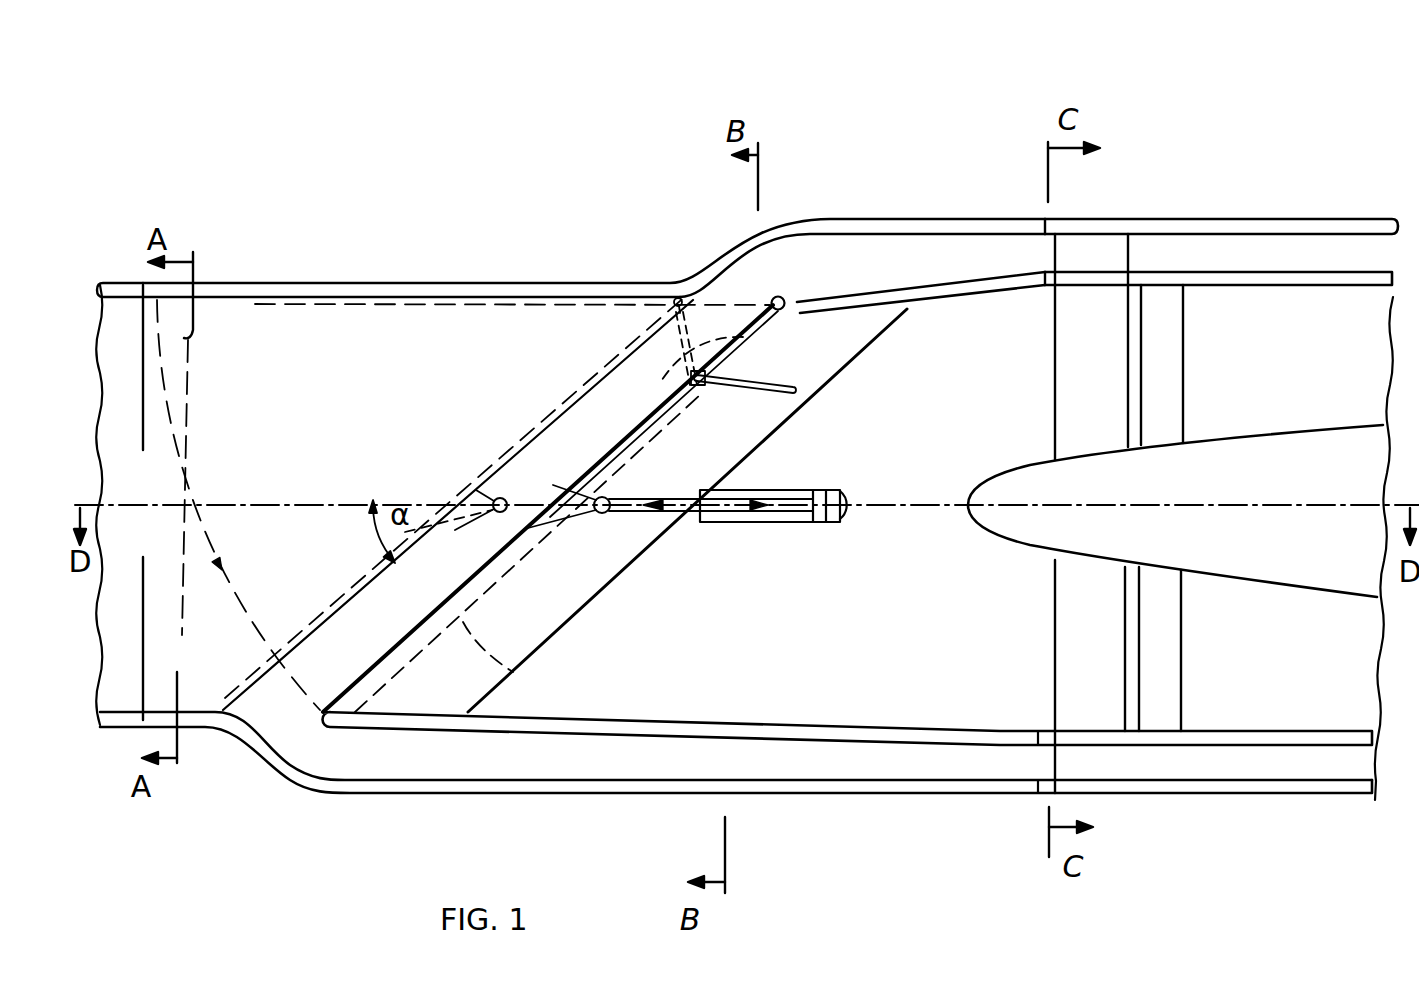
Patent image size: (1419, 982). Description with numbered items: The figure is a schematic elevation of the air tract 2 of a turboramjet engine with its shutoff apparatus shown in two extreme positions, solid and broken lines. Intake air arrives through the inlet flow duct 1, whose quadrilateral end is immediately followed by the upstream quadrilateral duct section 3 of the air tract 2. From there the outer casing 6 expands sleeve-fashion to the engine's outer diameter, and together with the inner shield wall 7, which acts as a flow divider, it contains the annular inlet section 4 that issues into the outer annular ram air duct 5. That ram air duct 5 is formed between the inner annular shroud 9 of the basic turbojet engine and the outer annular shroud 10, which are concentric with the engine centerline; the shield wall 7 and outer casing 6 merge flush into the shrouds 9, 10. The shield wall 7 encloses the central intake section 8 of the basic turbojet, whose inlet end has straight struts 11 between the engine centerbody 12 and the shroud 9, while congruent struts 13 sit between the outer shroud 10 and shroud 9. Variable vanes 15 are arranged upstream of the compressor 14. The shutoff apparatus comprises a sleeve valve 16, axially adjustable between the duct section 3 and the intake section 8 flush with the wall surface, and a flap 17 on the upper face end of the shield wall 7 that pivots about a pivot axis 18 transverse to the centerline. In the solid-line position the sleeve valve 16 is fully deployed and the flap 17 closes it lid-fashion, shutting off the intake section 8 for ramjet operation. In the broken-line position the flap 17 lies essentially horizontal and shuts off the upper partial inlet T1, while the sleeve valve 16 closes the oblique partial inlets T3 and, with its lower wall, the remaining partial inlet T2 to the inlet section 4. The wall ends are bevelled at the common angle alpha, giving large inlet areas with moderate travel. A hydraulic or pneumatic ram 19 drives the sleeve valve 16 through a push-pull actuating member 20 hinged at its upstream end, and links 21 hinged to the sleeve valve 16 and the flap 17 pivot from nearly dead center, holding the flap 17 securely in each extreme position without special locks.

The inlet flow duct 1 is at (106, 632).
The air tract 2 is at (726, 236).
The duct section 3 is at (313, 411).
The annular inlet section 4 is at (890, 268).
The ram air duct 5 is at (1287, 268).
The outer casing 6 is at (831, 221).
The shield wall 7 is at (968, 278).
The central intake section 8 is at (806, 655).
The inner annular shroud 9 is at (1357, 277).
The outer annular shroud 10 is at (1222, 224).
The struts 11 is at (1085, 358).
The engine centerbody 12 is at (997, 520).
The struts 13 is at (1097, 258).
The compressor 14 is at (1261, 704).
The vanes 15 is at (1163, 650).
The sleeve valve 16 is at (513, 633).
The flap 17 is at (665, 396).
The pivot axis 18 is at (783, 297).
The ram 19 is at (817, 483).
The actuating member 20 is at (735, 513).
The links 21 is at (745, 337).
The upper partial inlet T1 is at (740, 294).
The partial inlet T2 is at (262, 710).
The oblique partial inlets T3 is at (586, 430).